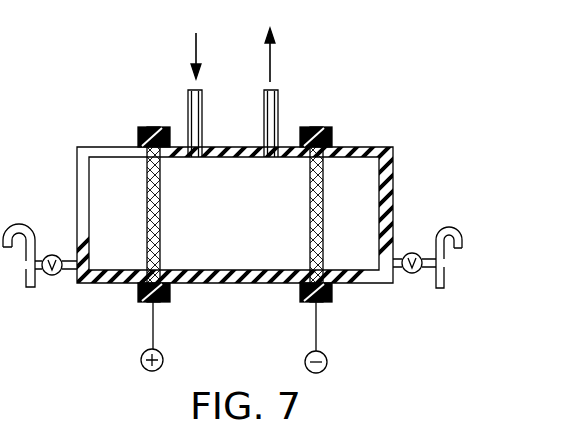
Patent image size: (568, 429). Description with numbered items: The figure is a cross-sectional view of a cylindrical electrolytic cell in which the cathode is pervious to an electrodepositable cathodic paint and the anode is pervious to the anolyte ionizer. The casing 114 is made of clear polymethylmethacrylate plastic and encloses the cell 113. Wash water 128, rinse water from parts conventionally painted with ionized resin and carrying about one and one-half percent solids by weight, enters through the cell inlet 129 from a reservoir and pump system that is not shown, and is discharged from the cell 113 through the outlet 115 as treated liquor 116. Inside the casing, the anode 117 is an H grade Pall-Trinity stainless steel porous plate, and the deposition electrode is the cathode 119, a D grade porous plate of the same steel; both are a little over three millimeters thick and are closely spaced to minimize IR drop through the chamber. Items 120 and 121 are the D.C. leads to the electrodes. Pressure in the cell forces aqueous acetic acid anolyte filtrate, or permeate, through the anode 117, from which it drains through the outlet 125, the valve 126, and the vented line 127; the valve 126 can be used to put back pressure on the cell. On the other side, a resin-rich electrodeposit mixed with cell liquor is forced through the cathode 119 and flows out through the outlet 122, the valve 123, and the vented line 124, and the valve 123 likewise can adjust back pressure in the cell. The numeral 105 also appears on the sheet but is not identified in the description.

The partial numeral (adjacent figure) 105 is at (16, 419).
The cell 113 is at (246, 222).
The casing 114 is at (231, 285).
The outlet 115 is at (278, 100).
The treated liquor 116 is at (272, 60).
The anode 117 is at (147, 208).
The cathode 119 is at (334, 200).
The D.C. lead 120 is at (152, 371).
The D.C. lead 121 is at (326, 356).
The outlet 122 is at (400, 272).
The valve 123 is at (412, 253).
The vented line 124 is at (444, 286).
The outlet 125 is at (72, 272).
The valve 126 is at (52, 255).
The vented line 127 is at (16, 288).
The wash water 128 is at (193, 56).
The cell inlet 129 is at (188, 100).